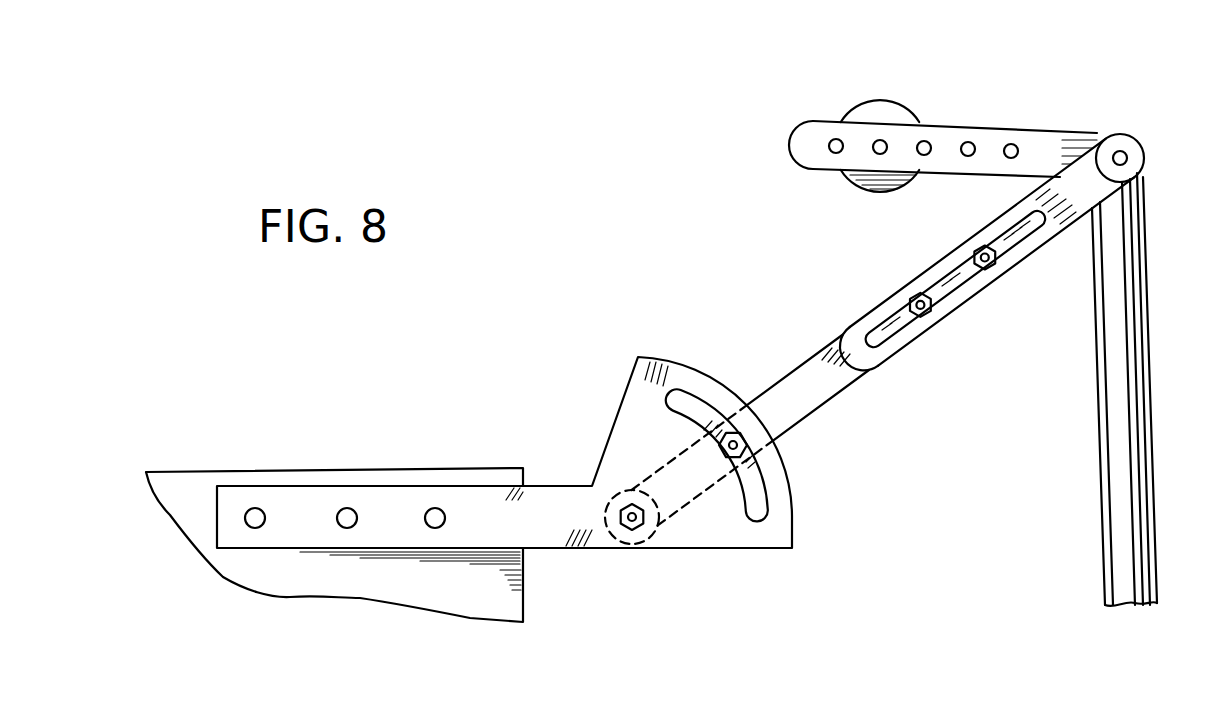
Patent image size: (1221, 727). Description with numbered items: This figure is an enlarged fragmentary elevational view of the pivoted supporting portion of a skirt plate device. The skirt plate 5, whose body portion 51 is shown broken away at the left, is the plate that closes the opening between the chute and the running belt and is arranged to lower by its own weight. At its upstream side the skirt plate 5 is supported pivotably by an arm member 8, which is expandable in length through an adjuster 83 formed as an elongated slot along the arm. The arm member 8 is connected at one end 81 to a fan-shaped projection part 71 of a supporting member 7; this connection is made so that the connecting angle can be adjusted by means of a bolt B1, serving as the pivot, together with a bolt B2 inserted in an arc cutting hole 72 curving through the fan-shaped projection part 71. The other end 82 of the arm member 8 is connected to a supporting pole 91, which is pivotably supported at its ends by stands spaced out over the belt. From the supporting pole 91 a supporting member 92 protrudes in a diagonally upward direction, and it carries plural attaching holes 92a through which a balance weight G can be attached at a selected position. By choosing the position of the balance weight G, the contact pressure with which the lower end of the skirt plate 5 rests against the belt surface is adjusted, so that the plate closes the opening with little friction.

The skirt plate 5 is at (334, 515).
The plate body 51 is at (410, 593).
The supporting member 7 is at (537, 490).
The fan-shaped projection part 71 is at (723, 532).
The arc cutting hole 72 is at (760, 510).
The bolt B1 is at (635, 527).
The bolt B2 is at (736, 431).
The arm member 8 is at (869, 379).
The one end of the arm member 81 is at (675, 487).
The other end of the arm member 82 is at (1063, 165).
The adjuster 83 is at (887, 370).
The supporting pole 91 is at (1120, 158).
The supporting member 92 is at (929, 112).
The attaching holes 92a is at (964, 142).
The balance weight G is at (864, 100).